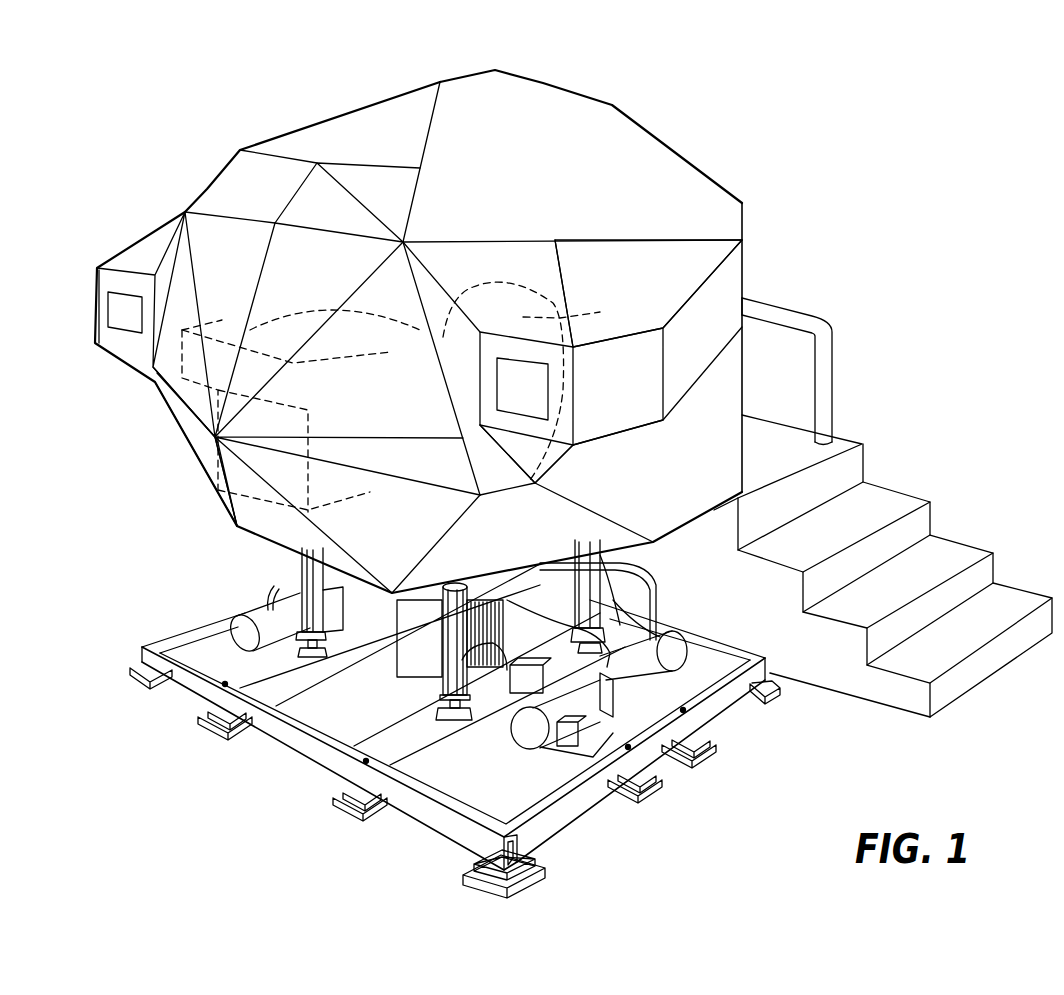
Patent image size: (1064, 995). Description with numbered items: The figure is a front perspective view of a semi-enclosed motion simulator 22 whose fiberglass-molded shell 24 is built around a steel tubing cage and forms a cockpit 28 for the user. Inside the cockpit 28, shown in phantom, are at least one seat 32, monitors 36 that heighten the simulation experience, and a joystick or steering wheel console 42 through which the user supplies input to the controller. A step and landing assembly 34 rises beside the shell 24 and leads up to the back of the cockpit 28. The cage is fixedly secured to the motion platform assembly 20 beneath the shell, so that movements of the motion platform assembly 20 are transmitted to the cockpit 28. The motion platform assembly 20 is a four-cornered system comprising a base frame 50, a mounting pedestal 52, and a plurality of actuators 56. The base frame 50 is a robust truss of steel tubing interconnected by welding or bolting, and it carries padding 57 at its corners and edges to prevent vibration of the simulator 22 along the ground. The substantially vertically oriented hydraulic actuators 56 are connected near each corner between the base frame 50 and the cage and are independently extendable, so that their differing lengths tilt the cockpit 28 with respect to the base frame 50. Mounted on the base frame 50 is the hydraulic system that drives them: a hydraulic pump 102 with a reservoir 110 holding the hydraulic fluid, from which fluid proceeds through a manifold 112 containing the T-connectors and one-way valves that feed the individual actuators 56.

The motion platform assembly 20 is at (262, 576).
The motion simulator 22 is at (705, 90).
The fiberglass-molded shell 24 is at (636, 197).
The cockpit 28 is at (533, 152).
The seat 32 is at (607, 302).
The step and landing assembly 34 is at (787, 446).
The monitors 36 is at (212, 422).
The joystick or steering wheel console 42 is at (391, 397).
The base frame 50 is at (290, 742).
The mounting pedestal 52 is at (395, 643).
The actuators 56 is at (267, 603).
The padding 57 is at (130, 677).
The hydraulic pump 102 is at (700, 753).
The reservoir 110 is at (243, 633).
The manifold 112 is at (508, 700).